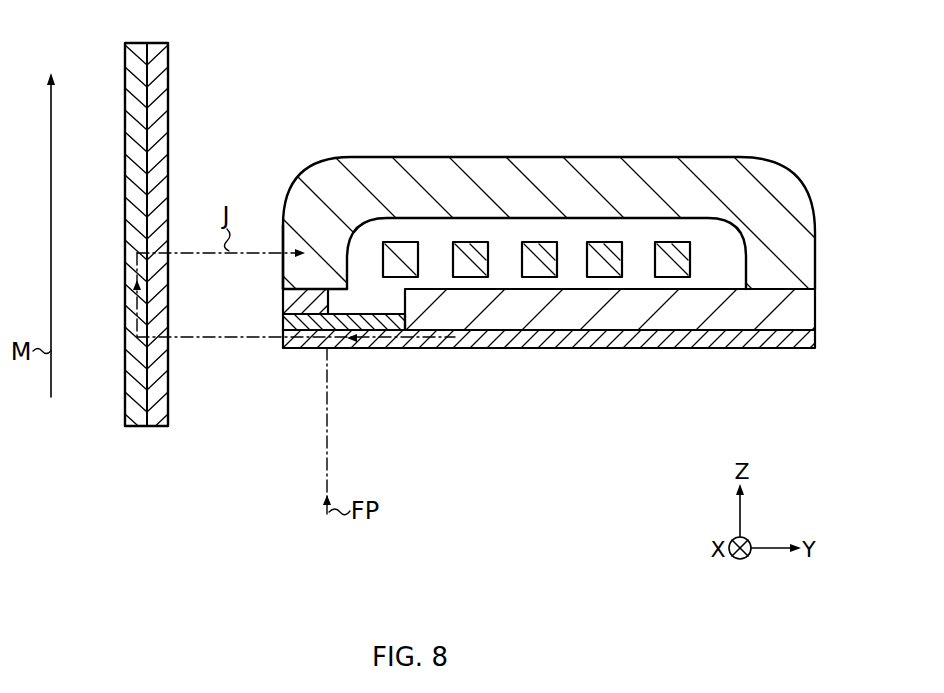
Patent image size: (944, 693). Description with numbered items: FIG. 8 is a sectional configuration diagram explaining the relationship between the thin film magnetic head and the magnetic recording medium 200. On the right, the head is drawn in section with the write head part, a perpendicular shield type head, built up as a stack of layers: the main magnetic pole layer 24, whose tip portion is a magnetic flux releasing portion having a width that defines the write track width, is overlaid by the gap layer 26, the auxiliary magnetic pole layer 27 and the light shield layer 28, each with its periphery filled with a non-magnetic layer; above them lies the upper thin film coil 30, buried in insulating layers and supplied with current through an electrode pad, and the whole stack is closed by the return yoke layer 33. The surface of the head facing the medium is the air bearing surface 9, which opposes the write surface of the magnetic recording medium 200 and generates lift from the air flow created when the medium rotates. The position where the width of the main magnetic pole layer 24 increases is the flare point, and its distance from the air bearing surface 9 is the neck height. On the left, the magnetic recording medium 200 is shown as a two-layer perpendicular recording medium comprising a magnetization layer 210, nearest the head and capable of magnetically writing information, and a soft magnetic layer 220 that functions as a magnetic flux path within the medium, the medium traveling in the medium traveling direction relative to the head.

The air bearing surface 9 is at (276, 301).
The main magnetic pole layer 24 is at (497, 343).
The gap layer 26 is at (373, 322).
The auxiliary magnetic pole layer 27 is at (602, 322).
The light shield layer 28 is at (315, 288).
The upper thin film coil 30 is at (600, 263).
The return yoke layer 33 is at (415, 173).
The magnetic recording medium 200 is at (150, 307).
The magnetization layer 210 is at (176, 281).
The soft magnetic layer 220 is at (139, 427).